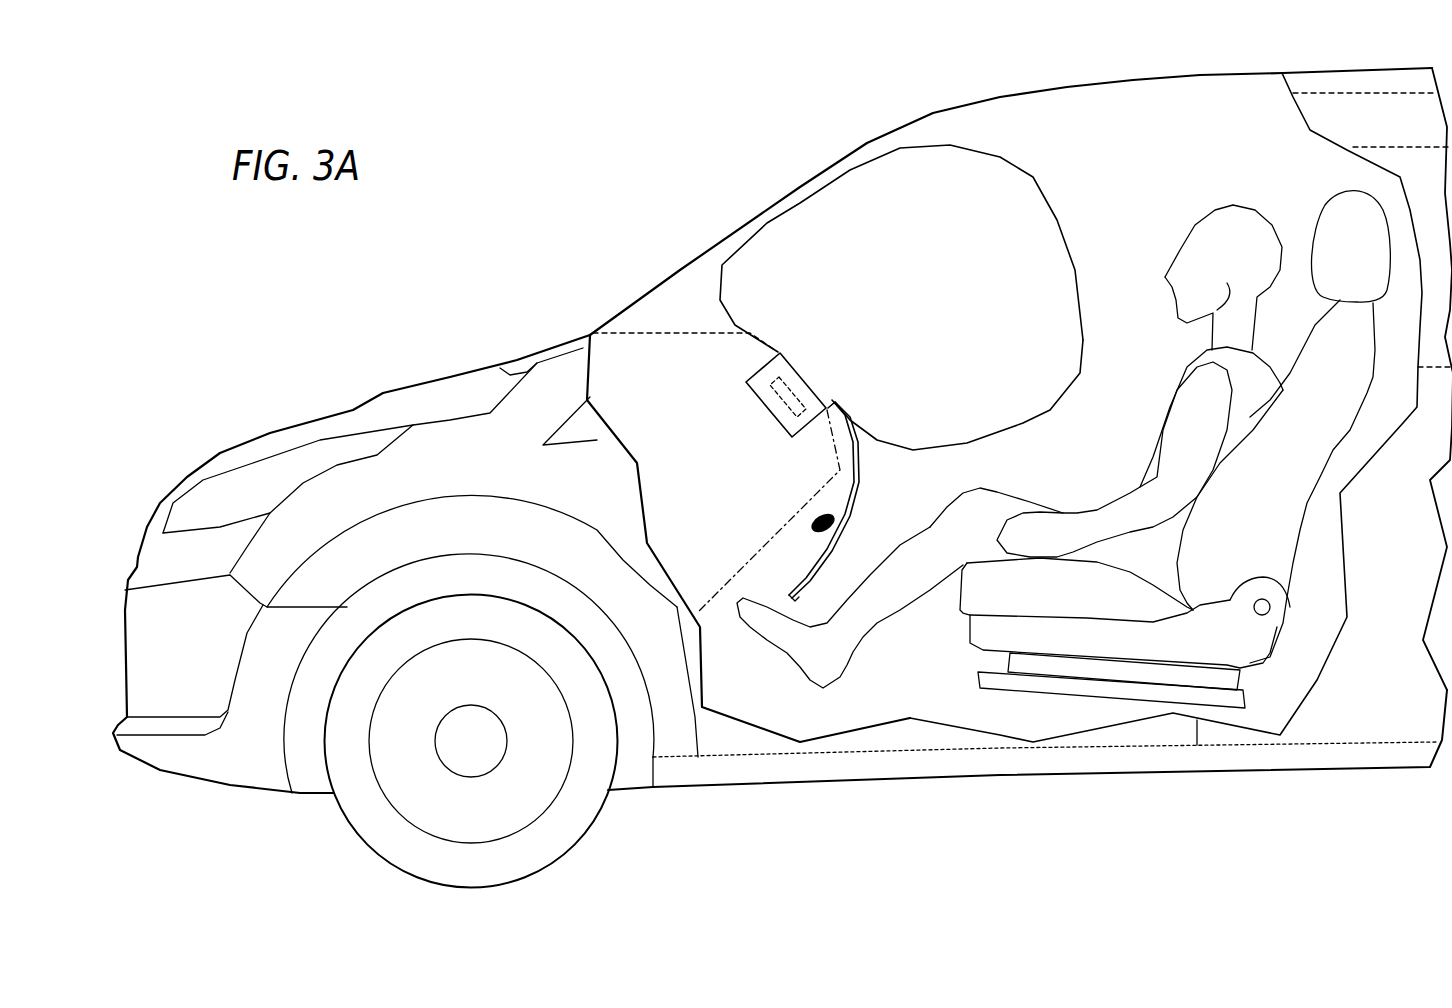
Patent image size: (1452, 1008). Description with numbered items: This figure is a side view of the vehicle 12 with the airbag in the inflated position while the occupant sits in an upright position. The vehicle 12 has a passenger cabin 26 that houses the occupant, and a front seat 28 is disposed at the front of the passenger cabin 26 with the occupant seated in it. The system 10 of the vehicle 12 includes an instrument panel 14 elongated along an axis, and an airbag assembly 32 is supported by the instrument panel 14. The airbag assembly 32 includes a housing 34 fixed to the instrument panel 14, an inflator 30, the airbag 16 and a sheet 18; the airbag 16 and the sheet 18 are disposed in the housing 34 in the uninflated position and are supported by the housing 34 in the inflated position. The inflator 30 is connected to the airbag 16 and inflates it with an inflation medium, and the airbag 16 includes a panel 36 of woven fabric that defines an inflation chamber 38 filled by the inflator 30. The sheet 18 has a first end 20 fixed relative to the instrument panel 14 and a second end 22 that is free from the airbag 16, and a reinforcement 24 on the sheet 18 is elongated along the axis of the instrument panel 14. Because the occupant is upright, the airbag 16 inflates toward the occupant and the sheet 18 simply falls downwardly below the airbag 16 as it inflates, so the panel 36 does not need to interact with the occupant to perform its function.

The system 10 is at (680, 300).
The vehicle 12 is at (197, 410).
The instrument panel 14 is at (625, 330).
The airbag 16 is at (853, 173).
The sheet 18 is at (803, 568).
The first end 20 is at (840, 434).
The second end 22 is at (760, 572).
The reinforcement 24 is at (810, 535).
The passenger cabin 26 is at (1148, 148).
The front seat 28 is at (1293, 550).
The inflator 30 is at (765, 405).
The airbag assembly 32 is at (755, 431).
The housing 34 is at (760, 378).
The panel 36 is at (953, 147).
The inflation chamber 38 is at (1007, 207).